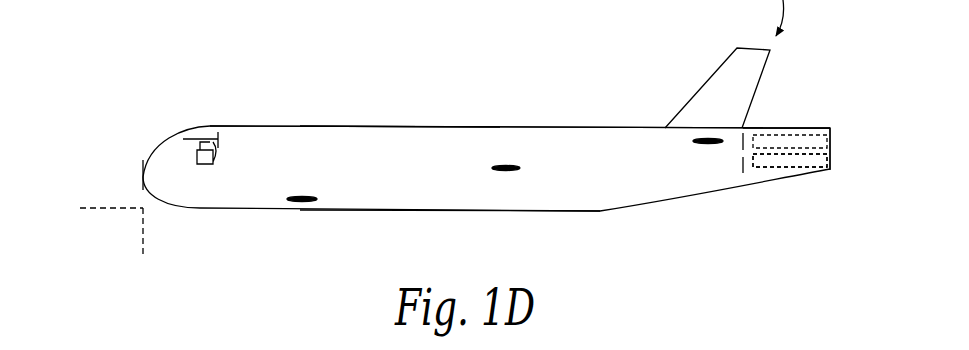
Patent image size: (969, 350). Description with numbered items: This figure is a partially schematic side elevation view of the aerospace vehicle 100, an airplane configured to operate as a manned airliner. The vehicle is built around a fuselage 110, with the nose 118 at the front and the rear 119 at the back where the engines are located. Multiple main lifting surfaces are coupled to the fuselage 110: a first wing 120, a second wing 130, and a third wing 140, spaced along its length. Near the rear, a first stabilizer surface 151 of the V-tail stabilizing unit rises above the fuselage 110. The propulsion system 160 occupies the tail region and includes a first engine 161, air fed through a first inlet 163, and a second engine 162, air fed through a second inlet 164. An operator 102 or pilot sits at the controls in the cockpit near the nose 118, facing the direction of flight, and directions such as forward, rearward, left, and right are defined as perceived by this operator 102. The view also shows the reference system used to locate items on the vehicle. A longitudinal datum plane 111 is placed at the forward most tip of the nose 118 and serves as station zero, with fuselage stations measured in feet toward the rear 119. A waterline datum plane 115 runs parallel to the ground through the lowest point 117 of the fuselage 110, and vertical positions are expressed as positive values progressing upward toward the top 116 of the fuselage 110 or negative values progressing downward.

The aerospace vehicle 100 is at (240, 60).
The operator 102 is at (200, 143).
The fuselage 110 is at (297, 125).
The longitudinal datum plane 111 is at (142, 237).
The waterline datum plane 115 is at (102, 206).
The top of the fuselage 116 is at (480, 115).
The lowest point of the fuselage 117 is at (401, 218).
The nose 118 is at (130, 170).
The rear 119 is at (848, 160).
The first wing 120 is at (303, 197).
The second wing 130 is at (504, 172).
The third wing 140 is at (702, 144).
The first stabilizer surface 151 is at (745, 88).
The propulsion system 160 is at (795, 112).
The first engine 161 is at (818, 133).
The second engine 162 is at (788, 168).
The first inlet 163 is at (742, 150).
The second inlet 164 is at (742, 172).